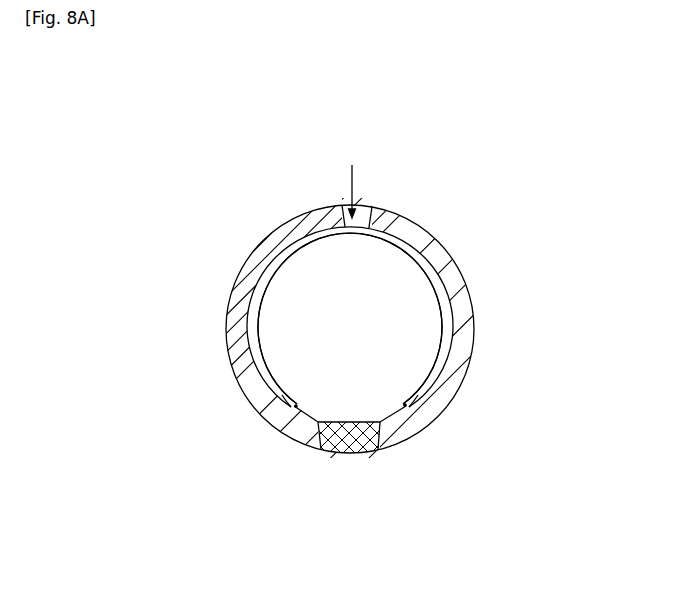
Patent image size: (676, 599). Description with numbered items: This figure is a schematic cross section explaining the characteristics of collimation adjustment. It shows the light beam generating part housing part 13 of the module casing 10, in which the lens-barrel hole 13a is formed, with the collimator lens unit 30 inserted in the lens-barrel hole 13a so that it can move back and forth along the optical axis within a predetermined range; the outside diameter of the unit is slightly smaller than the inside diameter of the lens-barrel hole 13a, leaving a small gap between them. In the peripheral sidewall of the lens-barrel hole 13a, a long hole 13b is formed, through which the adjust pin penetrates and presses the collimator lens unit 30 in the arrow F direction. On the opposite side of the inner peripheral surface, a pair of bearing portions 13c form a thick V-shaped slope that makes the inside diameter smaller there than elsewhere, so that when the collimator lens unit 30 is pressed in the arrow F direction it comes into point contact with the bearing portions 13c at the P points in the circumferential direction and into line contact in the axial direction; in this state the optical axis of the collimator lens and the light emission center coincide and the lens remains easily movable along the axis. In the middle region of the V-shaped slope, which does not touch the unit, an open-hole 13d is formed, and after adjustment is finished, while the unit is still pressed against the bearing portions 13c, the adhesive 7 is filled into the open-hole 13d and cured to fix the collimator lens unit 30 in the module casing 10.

The light beam generating part housing part 13 is at (433, 252).
The module casing 10 is at (338, 299).
The lens-barrel hole 13a is at (447, 300).
The long hole 13b is at (343, 206).
The bearing portions 13c is at (271, 392).
The open-hole 13d is at (366, 454).
The adhesive 7 is at (338, 299).
The collimator lens unit 30 is at (361, 329).
The arrow F direction F is at (358, 191).
The P points P is at (297, 406).